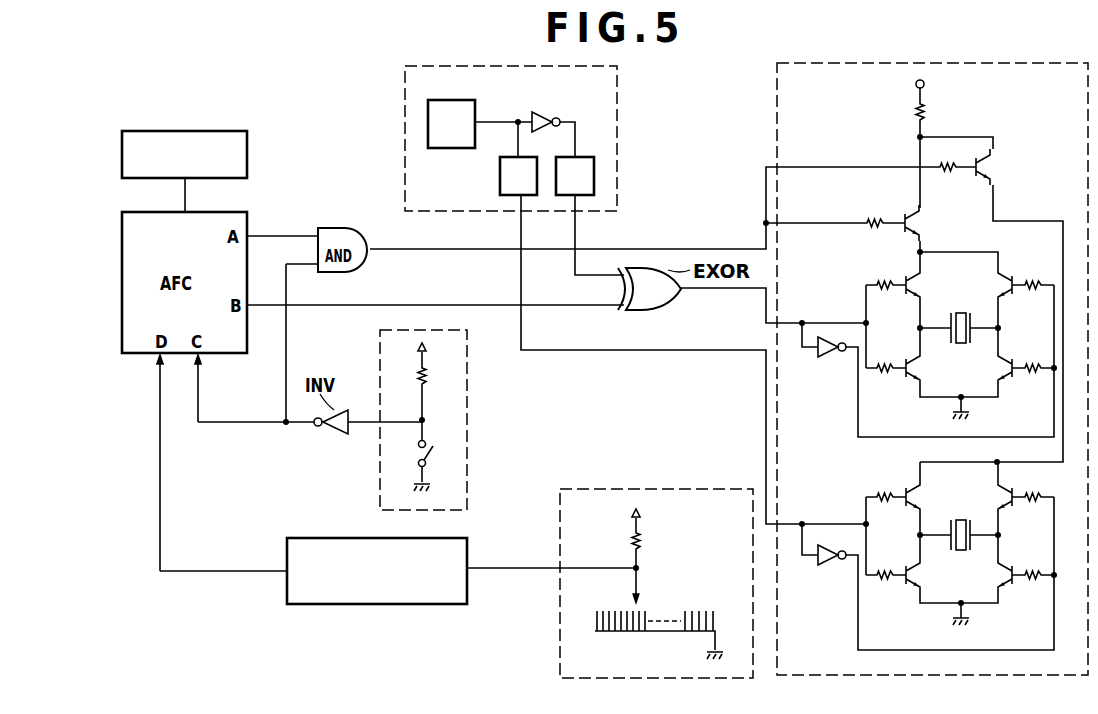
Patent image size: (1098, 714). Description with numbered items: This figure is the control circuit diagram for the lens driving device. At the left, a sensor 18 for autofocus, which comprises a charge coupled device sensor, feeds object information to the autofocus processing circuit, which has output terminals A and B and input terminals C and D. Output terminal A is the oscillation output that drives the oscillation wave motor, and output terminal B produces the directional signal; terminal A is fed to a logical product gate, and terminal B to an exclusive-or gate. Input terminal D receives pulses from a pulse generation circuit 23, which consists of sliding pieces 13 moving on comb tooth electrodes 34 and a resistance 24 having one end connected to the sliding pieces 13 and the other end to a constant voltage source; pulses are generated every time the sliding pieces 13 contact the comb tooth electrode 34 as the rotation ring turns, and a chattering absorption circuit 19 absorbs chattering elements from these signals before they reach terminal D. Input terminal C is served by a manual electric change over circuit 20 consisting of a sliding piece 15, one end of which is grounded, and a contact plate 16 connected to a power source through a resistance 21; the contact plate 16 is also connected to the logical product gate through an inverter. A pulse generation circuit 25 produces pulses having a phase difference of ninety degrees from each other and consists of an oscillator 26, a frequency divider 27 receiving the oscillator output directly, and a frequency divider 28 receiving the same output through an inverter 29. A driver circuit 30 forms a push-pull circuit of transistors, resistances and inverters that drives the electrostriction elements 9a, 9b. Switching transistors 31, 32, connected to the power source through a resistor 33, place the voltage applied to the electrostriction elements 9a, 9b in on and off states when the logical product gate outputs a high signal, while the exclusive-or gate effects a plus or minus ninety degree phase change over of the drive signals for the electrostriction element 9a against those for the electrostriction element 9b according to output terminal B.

The sensor 18 is at (166, 131).
The chattering absorption circuit 19 is at (348, 604).
The manual electric change over circuit 20 is at (467, 407).
The resistance 21 is at (418, 380).
The contact plate 16 is at (418, 450).
The sliding piece 15 is at (428, 456).
The pulse generation circuit 25 is at (617, 112).
The oscillator 26 is at (451, 124).
The frequency divider 27 is at (518, 176).
The frequency divider 28 is at (575, 176).
The inverter 29 is at (548, 112).
The driver circuit 30 is at (838, 62).
The resistor 33 is at (930, 118).
The switching transistor 31 is at (995, 167).
The switching transistor 32 is at (923, 223).
The electrostriction element 9a is at (960, 313).
The electrostriction element 9b is at (960, 520).
The pulse generation circuit 23 is at (612, 489).
The resistance 24 is at (630, 540).
The sliding pieces 13 is at (643, 588).
The comb tooth electrodes 34 is at (617, 632).